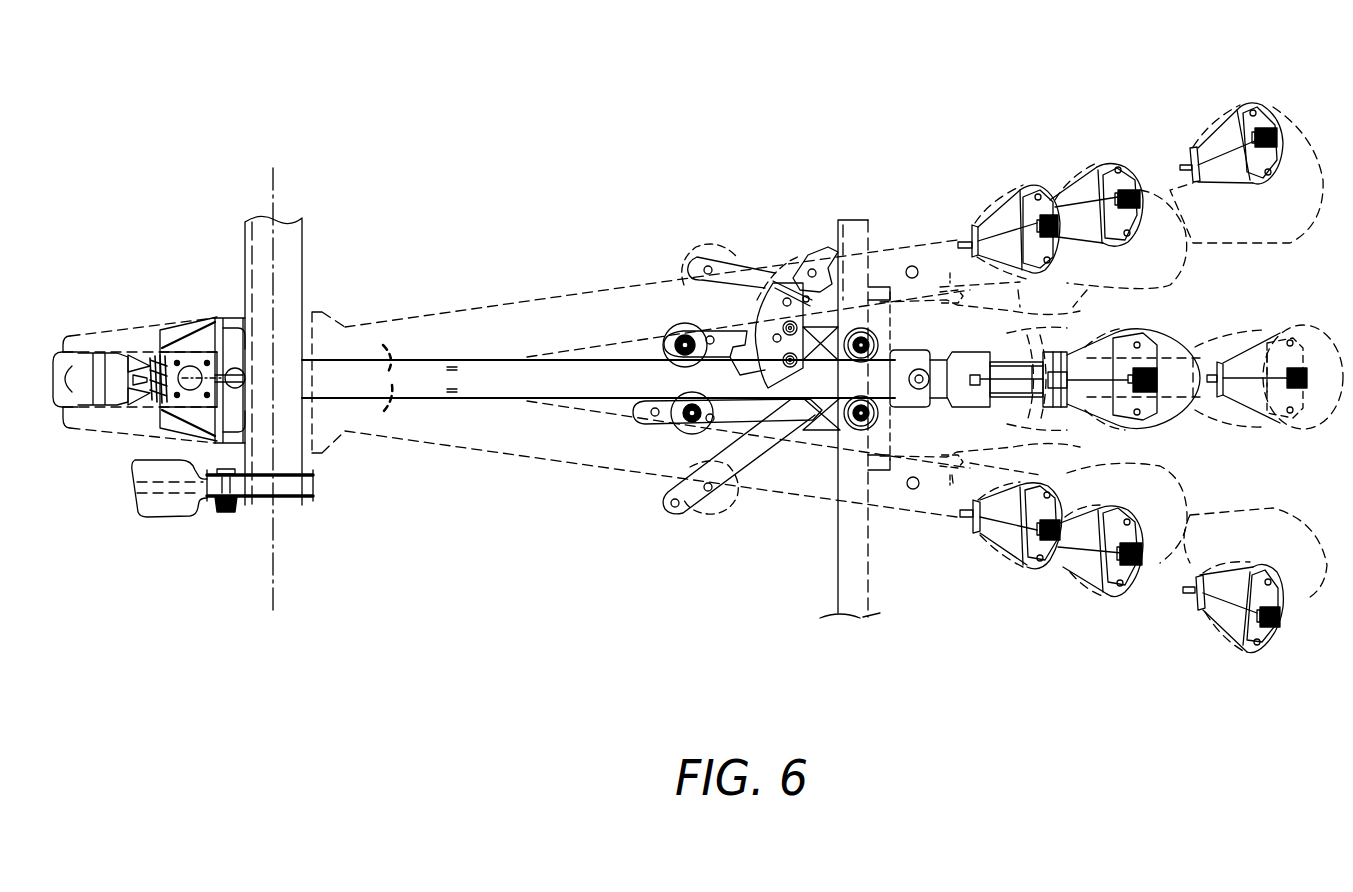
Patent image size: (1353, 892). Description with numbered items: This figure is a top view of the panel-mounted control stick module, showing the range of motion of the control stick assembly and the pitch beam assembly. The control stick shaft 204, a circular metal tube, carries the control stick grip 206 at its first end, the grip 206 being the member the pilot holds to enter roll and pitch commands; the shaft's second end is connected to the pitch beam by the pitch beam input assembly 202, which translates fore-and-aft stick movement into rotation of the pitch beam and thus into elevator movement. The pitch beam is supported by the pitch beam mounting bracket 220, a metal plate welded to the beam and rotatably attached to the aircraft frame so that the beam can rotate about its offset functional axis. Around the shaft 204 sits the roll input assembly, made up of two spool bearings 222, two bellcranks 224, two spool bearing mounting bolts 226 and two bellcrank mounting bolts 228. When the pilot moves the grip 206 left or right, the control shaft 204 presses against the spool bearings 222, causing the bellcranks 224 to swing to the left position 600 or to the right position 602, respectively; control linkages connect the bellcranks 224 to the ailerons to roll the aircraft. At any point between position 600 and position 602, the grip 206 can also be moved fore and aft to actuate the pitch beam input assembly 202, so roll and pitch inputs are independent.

The pitch beam input assembly 202 is at (227, 333).
The control stick shaft 204 is at (388, 363).
The control stick grip 206 is at (1167, 340).
The pitch beam mounting bracket 220 is at (240, 510).
The spool bearing 222 is at (715, 335).
The bellcrank 224 is at (690, 305).
The spool bearing mounting bolt 226 is at (665, 338).
The bellcrank mounting bolt 228 is at (875, 330).
The left position 600 is at (782, 503).
The right position 602 is at (780, 254).